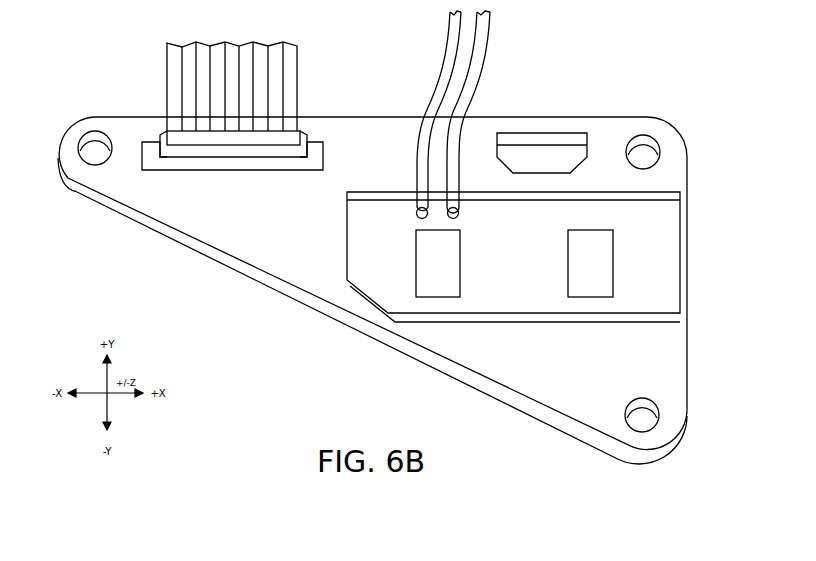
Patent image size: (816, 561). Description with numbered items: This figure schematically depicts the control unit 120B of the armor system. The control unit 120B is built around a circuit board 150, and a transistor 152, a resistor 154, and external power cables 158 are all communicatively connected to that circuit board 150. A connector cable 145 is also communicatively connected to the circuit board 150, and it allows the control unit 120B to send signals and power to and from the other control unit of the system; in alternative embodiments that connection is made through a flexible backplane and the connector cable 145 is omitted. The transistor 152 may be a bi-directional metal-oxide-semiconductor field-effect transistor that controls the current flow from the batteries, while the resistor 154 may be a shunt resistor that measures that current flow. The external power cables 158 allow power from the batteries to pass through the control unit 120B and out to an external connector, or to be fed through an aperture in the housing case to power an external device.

The control unit 120B is at (93, 116).
The connector cable 145 is at (297, 82).
The circuit board 150 is at (687, 366).
The transistor 152 is at (568, 262).
The resistor 154 is at (416, 262).
The external power cables 158 is at (446, 72).